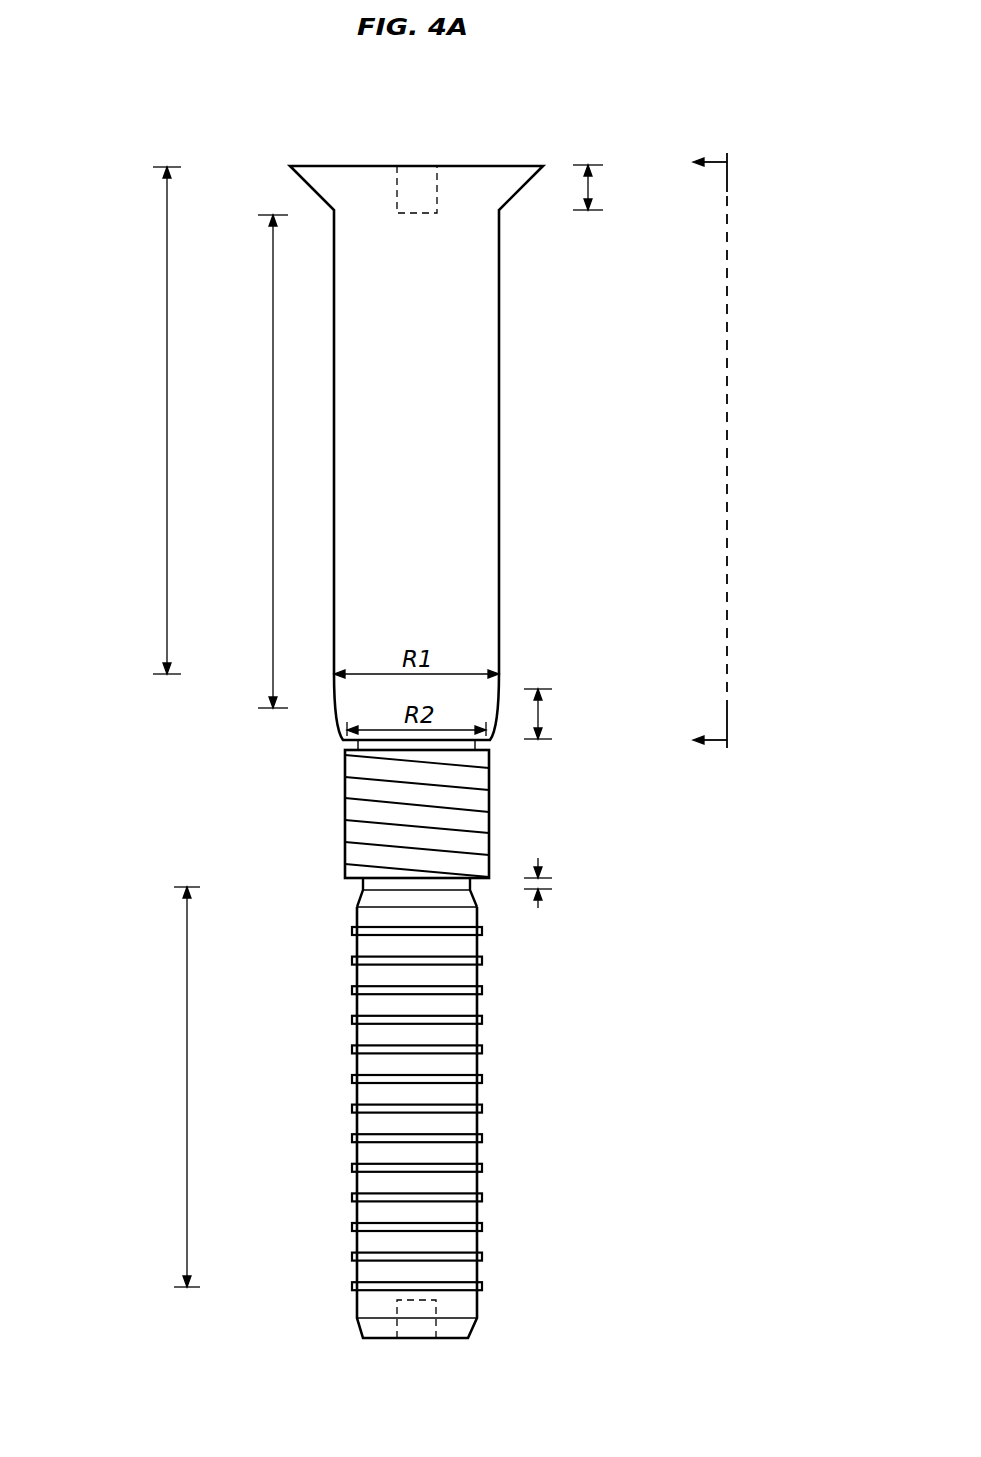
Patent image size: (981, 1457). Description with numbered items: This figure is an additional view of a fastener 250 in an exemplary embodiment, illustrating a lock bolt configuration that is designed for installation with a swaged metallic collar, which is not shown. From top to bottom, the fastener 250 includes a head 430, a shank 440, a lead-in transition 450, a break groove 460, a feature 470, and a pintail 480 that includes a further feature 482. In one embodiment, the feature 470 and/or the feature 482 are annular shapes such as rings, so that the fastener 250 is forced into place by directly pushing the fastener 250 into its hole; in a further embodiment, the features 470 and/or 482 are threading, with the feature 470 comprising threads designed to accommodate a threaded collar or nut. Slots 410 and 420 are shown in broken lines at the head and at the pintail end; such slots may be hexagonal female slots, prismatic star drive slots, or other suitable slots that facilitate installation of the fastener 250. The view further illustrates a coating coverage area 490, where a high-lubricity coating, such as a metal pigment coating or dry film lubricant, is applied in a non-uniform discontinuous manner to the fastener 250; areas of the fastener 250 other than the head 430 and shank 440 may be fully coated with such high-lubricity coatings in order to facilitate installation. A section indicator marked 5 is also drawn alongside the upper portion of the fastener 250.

The fastener 250 is at (650, 968).
The slot 410 is at (437, 189).
The slot 420 is at (394, 1322).
The head 430 is at (588, 183).
The shank 440 is at (273, 467).
The lead-in transition 450 is at (538, 708).
The break groove 460 is at (552, 878).
The feature 470 is at (477, 823).
The pintail 480 is at (187, 1062).
The feature 482 is at (475, 1018).
The coating coverage area 490 is at (167, 392).
The section line for FIG. 5 is at (722, 450).